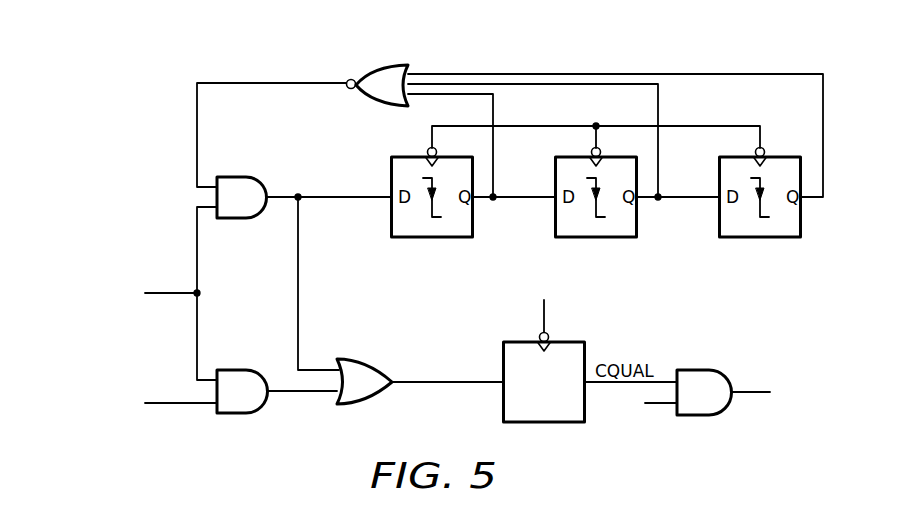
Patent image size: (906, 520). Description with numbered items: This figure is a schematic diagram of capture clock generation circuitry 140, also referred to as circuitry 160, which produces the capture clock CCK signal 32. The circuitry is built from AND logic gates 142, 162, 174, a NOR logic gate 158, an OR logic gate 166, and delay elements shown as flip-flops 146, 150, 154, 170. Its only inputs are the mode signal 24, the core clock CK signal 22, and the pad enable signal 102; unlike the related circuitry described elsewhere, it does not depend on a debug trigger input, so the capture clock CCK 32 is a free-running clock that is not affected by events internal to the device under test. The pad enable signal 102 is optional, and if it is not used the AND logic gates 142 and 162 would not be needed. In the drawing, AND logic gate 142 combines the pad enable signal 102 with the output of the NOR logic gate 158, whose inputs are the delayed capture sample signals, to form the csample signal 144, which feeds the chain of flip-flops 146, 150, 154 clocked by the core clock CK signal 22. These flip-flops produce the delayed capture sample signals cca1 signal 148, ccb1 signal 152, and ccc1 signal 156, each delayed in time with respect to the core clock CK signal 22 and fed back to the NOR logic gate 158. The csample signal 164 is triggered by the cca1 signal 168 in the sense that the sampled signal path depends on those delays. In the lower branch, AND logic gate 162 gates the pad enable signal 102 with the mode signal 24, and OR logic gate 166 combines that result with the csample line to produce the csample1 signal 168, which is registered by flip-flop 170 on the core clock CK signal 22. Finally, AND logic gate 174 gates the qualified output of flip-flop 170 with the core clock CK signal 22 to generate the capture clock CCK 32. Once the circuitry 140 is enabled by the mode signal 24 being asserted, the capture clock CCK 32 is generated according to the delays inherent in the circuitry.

The capture clock generation circuitry 140 is at (556, 42).
The capture clock generation circuitry 160 is at (197, 145).
The pad enable signal 102 is at (173, 292).
The AND logic gate 142 is at (240, 177).
The CSAMPLE signal 144 is at (357, 200).
The flip-flop 146 is at (434, 238).
The cca1 signal 148 is at (515, 200).
The flip-flop 150 is at (598, 238).
The ccb1 signal 152 is at (677, 200).
The flip-flop 154 is at (761, 238).
The ccc1 signal 156 is at (785, 74).
The NOR logic gate 158 is at (376, 65).
The core clock CK signal 22 is at (696, 126).
The mode signal 24 is at (172, 405).
The AND logic gate 162 is at (241, 415).
The csample signal 164 is at (299, 395).
The OR logic gate 166 is at (373, 404).
The cca1 signal 168 is at (445, 385).
The flip-flop 170 is at (546, 425).
The AND logic gate 174 is at (699, 370).
The capture clock CCK signal 32 is at (751, 396).